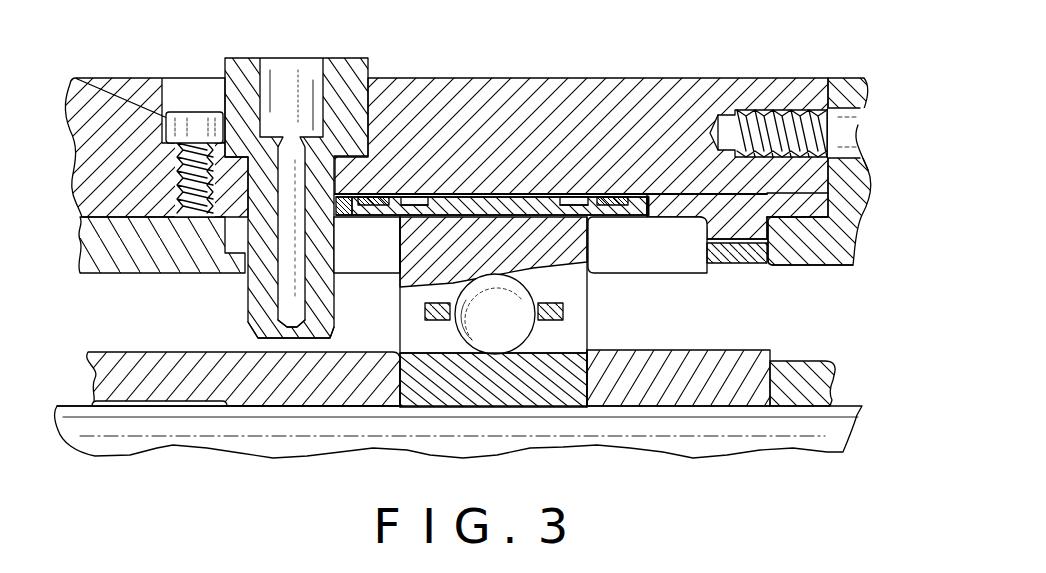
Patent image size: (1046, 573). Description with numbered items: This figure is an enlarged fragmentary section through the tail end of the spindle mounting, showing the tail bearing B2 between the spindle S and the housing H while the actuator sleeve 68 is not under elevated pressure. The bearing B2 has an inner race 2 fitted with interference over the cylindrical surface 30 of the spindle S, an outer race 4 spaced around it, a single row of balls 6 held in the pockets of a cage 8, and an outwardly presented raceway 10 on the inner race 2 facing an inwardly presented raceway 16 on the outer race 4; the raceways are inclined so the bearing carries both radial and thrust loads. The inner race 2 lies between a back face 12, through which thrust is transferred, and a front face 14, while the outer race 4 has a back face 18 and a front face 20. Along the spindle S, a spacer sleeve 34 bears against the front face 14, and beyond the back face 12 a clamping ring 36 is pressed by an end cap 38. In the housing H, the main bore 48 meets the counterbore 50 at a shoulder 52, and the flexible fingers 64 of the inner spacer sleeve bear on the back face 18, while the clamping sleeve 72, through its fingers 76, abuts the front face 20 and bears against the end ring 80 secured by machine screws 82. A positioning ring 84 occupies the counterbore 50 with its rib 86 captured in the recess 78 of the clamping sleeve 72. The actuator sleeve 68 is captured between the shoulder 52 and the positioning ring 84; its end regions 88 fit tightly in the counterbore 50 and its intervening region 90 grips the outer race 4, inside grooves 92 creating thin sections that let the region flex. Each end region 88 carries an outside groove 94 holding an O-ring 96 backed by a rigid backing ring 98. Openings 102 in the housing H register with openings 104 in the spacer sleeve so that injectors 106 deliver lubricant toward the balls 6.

The inner race 2 is at (575, 388).
The outer race 4 is at (482, 240).
The balls 6 is at (517, 322).
The cage 8 is at (563, 313).
The raceway 10 is at (455, 336).
The back face 12 is at (590, 380).
The front face 14 is at (383, 385).
The raceway 16 is at (497, 278).
The back face 18 is at (396, 247).
The front face 20 is at (590, 238).
The cylindrical surface 30 is at (80, 405).
The spacer sleeve 34 is at (226, 373).
The clamping ring 36 is at (707, 387).
The end cap 38 is at (803, 390).
The main bore 48 is at (160, 218).
The counterbore 50 is at (799, 196).
The shoulder 52 is at (360, 220).
The fingers 64 is at (370, 246).
The actuator sleeve 68 is at (540, 179).
The clamping sleeve 72 is at (748, 263).
The fingers 76 is at (673, 243).
The recess 78 is at (736, 240).
The end ring 80 is at (794, 200).
The machine screws 82 is at (862, 77).
The positioning ring 84 is at (738, 135).
The rib 86 is at (775, 240).
The end regions 88 is at (333, 190).
The intervening region 90 is at (510, 205).
The inside grooves 92 is at (410, 195).
The outside grooves 94 is at (378, 197).
The O-ring 96 is at (408, 200).
The backing ring 98 is at (340, 195).
The openings 102 is at (257, 160).
The openings 104 is at (245, 274).
The injectors 106 is at (248, 118).
The housing H is at (119, 70).
The spindle S is at (126, 464).
The tail bearing B2 is at (543, 408).